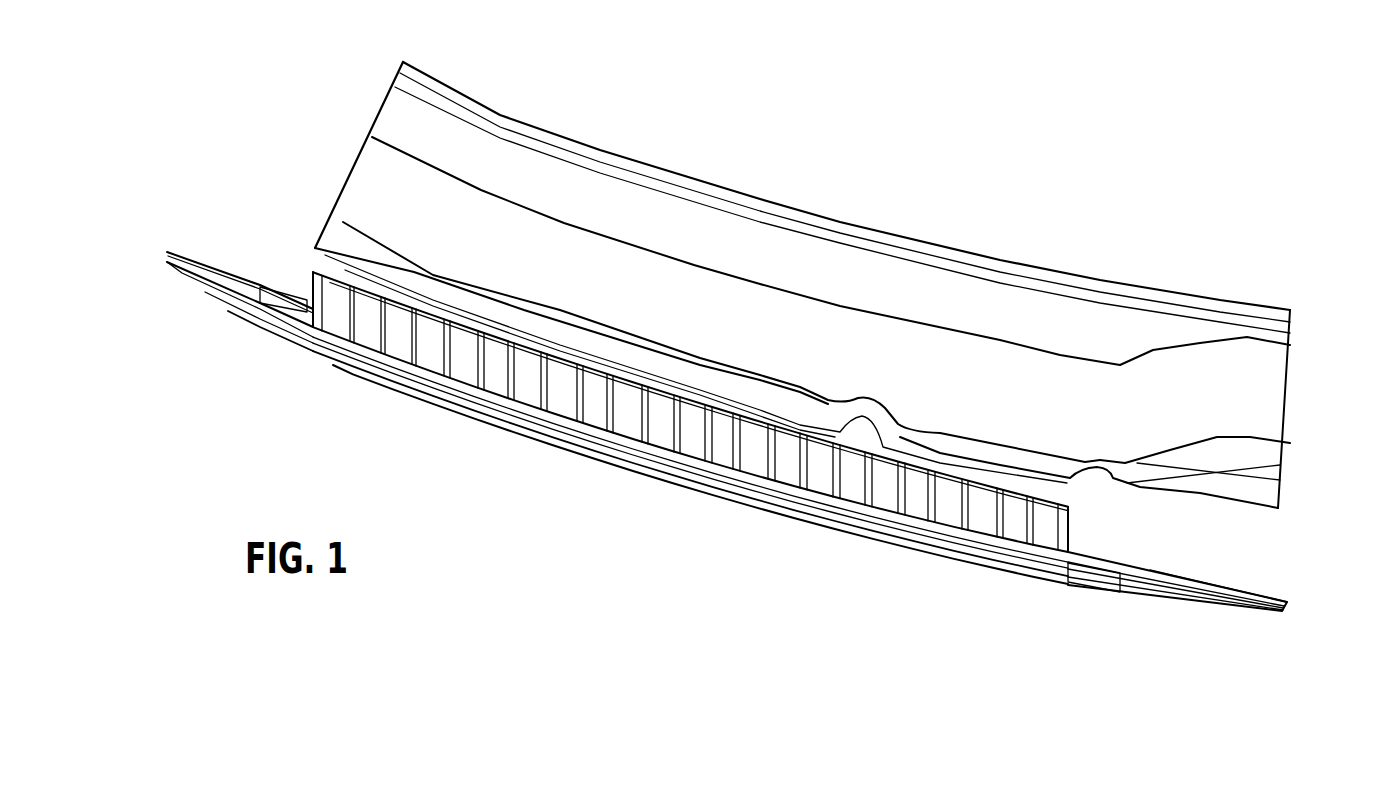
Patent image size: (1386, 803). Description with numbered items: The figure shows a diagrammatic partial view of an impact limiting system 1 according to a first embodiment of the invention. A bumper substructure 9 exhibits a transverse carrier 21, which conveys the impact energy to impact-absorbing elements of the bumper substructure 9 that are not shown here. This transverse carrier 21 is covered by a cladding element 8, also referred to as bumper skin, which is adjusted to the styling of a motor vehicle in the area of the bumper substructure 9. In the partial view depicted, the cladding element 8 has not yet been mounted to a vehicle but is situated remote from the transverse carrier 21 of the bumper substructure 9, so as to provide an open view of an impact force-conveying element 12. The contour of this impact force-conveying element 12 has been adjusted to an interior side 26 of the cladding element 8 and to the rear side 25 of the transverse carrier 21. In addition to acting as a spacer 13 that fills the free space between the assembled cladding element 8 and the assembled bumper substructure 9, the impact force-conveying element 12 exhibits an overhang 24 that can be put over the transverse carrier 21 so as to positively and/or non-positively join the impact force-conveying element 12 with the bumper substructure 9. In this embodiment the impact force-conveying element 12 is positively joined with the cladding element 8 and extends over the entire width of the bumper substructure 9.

The impact limiting system 1 is at (1124, 208).
The cladding element 8 is at (180, 273).
The bumper substructure 9 is at (1304, 390).
The impact force-conveying element 12 is at (285, 300).
The spacer 13 is at (249, 276).
The transverse carrier 21 is at (872, 270).
The overhang 24 is at (1017, 517).
The rear side 25 is at (1240, 448).
The interior side 26 is at (1222, 600).